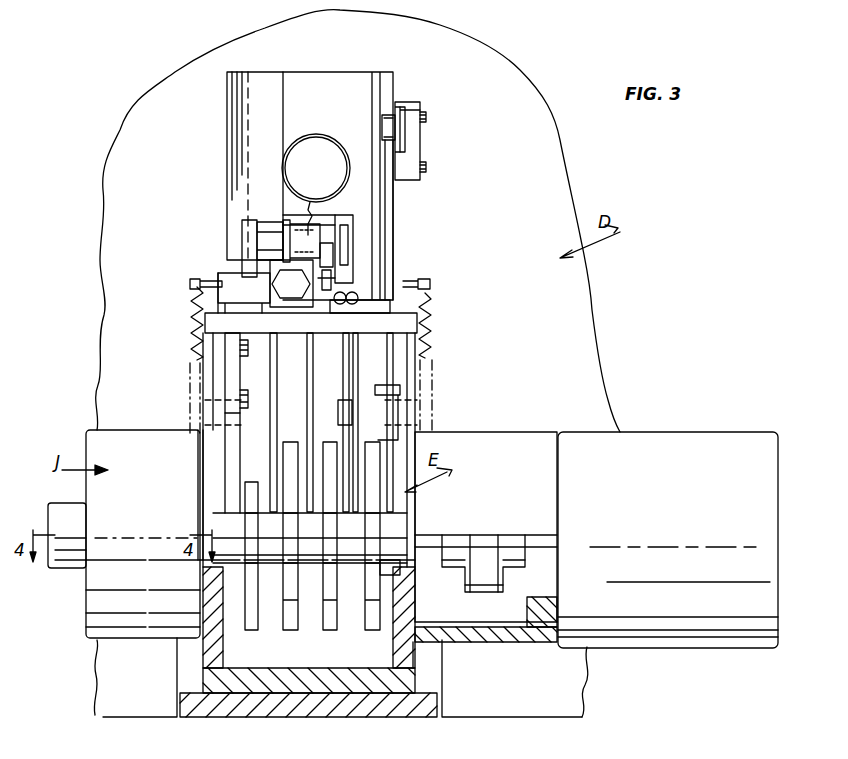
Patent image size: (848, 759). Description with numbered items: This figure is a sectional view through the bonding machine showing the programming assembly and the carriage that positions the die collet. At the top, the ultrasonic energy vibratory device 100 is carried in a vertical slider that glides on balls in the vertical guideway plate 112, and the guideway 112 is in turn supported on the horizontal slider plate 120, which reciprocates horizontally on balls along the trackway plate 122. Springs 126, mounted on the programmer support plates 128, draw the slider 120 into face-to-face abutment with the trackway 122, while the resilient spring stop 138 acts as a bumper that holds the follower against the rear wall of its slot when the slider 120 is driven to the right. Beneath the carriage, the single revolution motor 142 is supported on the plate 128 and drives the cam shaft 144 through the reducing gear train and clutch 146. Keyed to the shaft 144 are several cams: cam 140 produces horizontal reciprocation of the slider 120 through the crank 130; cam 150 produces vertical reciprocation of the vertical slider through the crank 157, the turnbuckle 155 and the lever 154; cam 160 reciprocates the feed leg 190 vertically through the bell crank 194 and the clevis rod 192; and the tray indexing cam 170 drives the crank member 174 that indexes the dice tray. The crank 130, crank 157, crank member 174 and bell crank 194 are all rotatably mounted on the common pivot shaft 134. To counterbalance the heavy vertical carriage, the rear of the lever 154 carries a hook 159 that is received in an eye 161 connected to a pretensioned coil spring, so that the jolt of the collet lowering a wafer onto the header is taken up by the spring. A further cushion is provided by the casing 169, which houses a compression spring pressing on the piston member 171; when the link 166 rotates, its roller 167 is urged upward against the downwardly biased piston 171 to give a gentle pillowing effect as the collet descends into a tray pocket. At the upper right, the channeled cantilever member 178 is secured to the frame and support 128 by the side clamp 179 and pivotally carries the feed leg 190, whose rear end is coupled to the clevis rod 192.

The ultrasonic energy vibratory device 100 is at (330, 114).
The vertical guideway plate 112 is at (355, 50).
The horizontal slider plate 120 is at (405, 285).
The horizontal trackway plate 122 is at (413, 325).
The springs 126 is at (192, 345).
The programmer support plates 128 is at (205, 668).
The crank 130 is at (312, 376).
The pivot shaft 134 is at (225, 413).
The resilient spring stop 138 is at (290, 296).
The cam 140 is at (292, 632).
The single revolution motor 142 is at (740, 432).
The cam shaft 144 is at (392, 567).
The reducing gear train and clutch 146 is at (487, 535).
The cam 150 is at (330, 632).
The lever 154 is at (312, 200).
The turnbuckle 155 is at (327, 306).
The crank 157 is at (340, 388).
The hook 159 is at (335, 249).
The cam 160 is at (372, 632).
The eye 161 is at (355, 226).
The link 166 is at (245, 250).
The roller 167 is at (258, 240).
The casing 169 is at (278, 48).
The tray indexing cam 170 is at (252, 632).
The piston member 171 is at (262, 225).
The crank member 174 is at (235, 476).
The channeled cantilever member 178 is at (400, 102).
The side clamp 179 is at (413, 136).
The feed leg 190 is at (395, 125).
The clevis rod 192 is at (388, 191).
The bell crank 194 is at (385, 418).